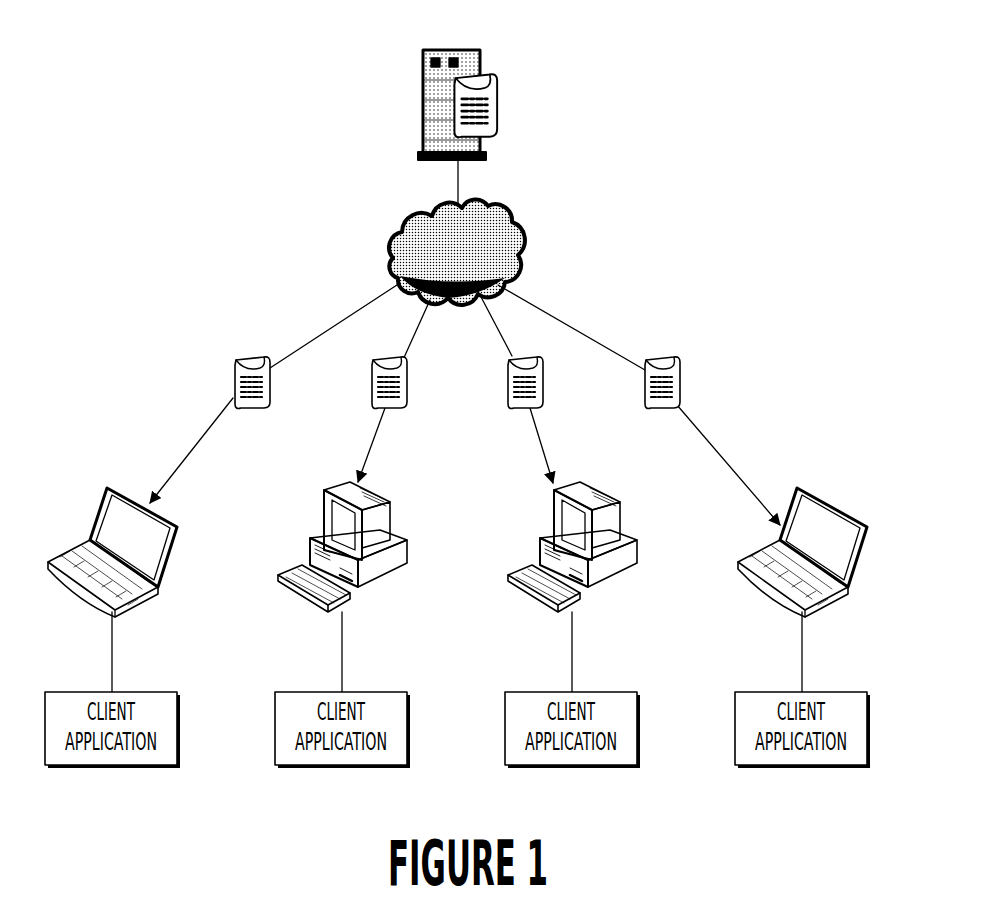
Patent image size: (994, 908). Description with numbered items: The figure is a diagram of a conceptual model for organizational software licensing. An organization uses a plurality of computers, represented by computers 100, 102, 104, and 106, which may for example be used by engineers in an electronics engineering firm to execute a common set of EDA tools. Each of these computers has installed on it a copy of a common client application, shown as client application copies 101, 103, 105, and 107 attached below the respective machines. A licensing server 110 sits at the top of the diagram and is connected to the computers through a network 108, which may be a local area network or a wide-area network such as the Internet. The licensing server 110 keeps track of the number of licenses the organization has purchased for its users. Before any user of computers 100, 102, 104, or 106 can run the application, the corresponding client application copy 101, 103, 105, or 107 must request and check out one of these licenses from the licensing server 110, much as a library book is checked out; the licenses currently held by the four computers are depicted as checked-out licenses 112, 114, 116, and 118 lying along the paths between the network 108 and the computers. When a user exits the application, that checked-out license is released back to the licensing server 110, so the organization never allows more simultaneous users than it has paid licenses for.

The computer 100 is at (176, 535).
The client application copy 101 is at (147, 690).
The computer 102 is at (393, 522).
The client application copy 103 is at (377, 690).
The computer 104 is at (623, 522).
The client application copy 105 is at (607, 690).
The computer 106 is at (812, 493).
The client application copy 107 is at (837, 690).
The network 108 is at (522, 245).
The licensing server 110 is at (456, 50).
The checked-out license 112 is at (250, 353).
The checked-out license 114 is at (393, 350).
The checked-out license 116 is at (518, 353).
The checked-out license 118 is at (658, 352).